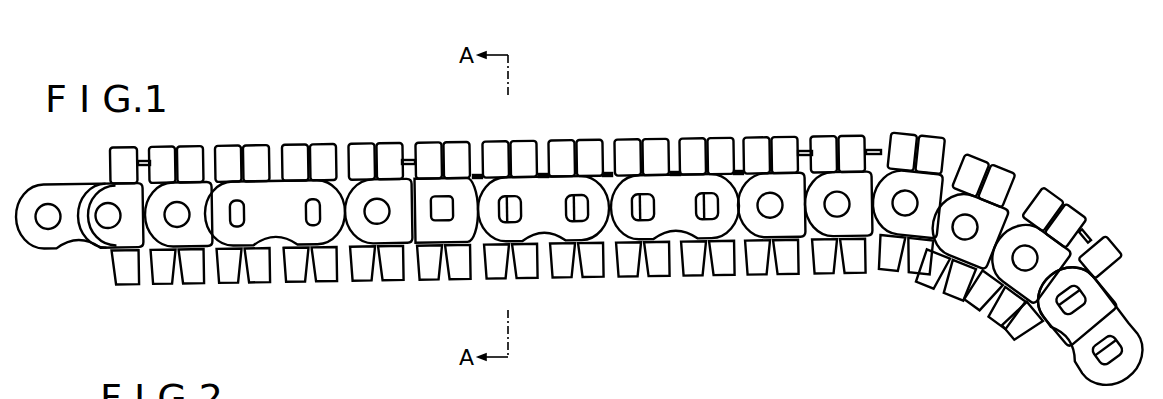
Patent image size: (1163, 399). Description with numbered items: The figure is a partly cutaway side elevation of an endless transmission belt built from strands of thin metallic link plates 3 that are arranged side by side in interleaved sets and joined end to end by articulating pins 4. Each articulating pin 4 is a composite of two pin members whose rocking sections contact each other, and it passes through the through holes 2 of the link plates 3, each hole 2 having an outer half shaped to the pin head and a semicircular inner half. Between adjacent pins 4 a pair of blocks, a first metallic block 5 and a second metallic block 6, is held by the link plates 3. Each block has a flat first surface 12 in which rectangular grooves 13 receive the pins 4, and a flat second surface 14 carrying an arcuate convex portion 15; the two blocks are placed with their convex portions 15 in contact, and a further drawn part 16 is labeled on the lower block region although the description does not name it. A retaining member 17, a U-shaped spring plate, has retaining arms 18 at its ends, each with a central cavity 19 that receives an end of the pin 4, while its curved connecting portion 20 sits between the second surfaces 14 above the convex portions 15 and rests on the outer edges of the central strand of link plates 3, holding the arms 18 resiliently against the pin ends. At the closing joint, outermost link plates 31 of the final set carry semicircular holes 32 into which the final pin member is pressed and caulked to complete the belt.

The through hole 2 is at (712, 210).
The link plate 3 is at (547, 220).
The articulating pin 4 is at (518, 213).
The first metallic block 5 is at (591, 140).
The second metallic block 6 is at (423, 195).
The first surface 12 is at (428, 148).
The rectangular groove 13 is at (412, 180).
The second surface 14 is at (416, 268).
The convex portion 15 is at (490, 170).
The lower pad of special link 16 is at (440, 253).
The retaining member 17 is at (803, 150).
The retaining arm 18 is at (991, 317).
The cavity 19 is at (1016, 257).
The connecting portion 20 is at (543, 173).
The outermost link plate 31 is at (280, 197).
The semicircular hole 32 is at (234, 228).